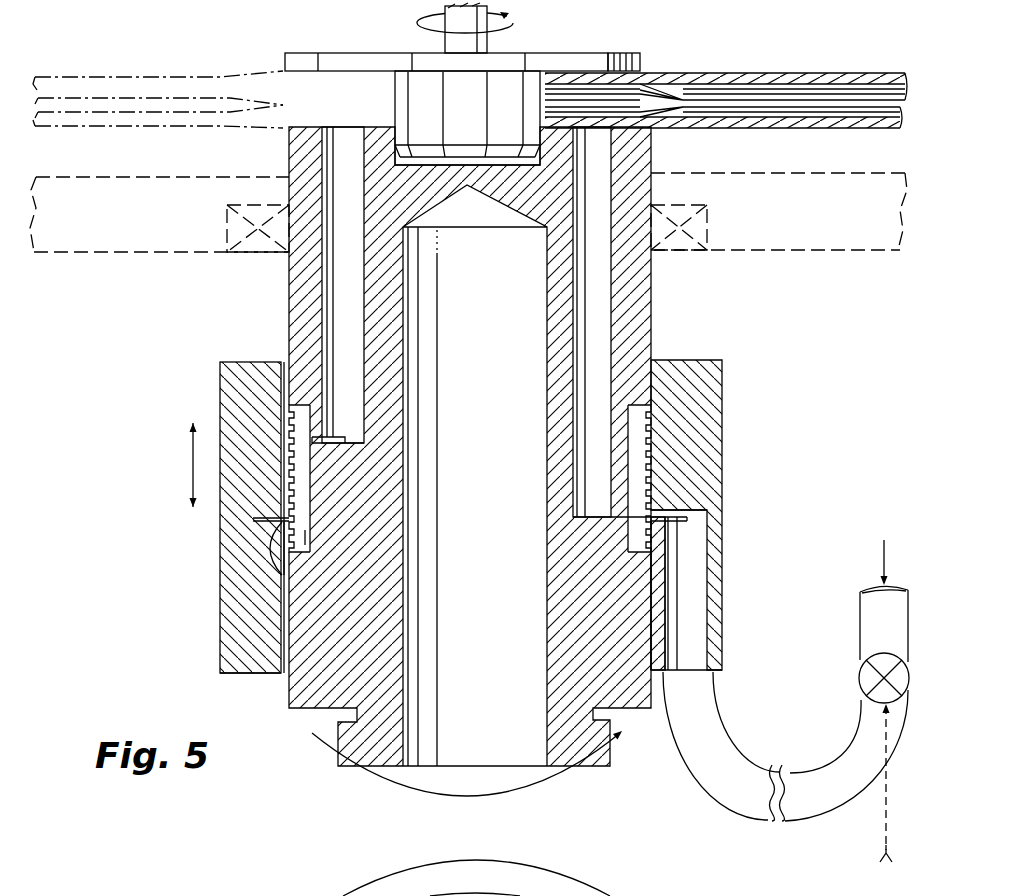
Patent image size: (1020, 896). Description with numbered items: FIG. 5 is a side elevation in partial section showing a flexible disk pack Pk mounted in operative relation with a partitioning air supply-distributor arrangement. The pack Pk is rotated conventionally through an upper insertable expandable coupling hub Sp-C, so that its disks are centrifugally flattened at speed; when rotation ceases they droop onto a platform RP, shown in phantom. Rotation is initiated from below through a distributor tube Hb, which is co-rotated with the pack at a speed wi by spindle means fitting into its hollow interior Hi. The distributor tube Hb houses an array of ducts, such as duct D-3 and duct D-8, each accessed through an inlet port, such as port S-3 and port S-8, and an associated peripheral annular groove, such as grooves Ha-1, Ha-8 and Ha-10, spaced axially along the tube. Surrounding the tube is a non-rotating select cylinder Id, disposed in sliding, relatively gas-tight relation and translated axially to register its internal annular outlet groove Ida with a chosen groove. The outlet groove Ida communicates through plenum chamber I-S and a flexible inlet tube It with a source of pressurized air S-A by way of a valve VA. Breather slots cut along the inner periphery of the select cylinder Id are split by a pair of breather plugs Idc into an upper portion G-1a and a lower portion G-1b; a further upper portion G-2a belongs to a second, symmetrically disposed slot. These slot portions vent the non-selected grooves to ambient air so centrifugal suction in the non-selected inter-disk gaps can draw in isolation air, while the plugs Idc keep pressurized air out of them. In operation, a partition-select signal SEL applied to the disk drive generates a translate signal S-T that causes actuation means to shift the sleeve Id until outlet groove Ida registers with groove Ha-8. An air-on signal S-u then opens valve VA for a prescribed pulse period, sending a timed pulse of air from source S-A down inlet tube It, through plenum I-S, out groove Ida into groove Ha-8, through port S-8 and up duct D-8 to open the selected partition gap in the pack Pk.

The insertable expandable coupling hub Sp-C is at (549, 45).
The translate signal S-T is at (643, 82).
The flexible disk pack Pk is at (754, 68).
The platform RP is at (770, 173).
The duct D-3 is at (355, 320).
The distributor cylinder Hb is at (657, 321).
The select cylinder Id is at (726, 356).
The upper breather slot portion G-1a is at (287, 362).
The lower breather slot portion G-1b is at (290, 680).
The duct D-8 is at (592, 397).
The annular inlet groove Ha-1 is at (650, 408).
The annular inlet groove Ha-8 is at (650, 510).
The annular inlet groove Ha-10 is at (303, 548).
The inlet port S-3 is at (322, 438).
The inlet port S-8 is at (640, 518).
The annular outlet groove Ida is at (265, 520).
The breather plug Idc is at (280, 550).
The plenum chamber I-S is at (693, 610).
The hollow interior Hi is at (500, 717).
The rotational speed wi is at (610, 777).
The inlet tube It is at (723, 727).
The valve VA is at (863, 652).
The source of pressurized air S-A is at (868, 578).
The air-on signal S-u is at (852, 783).
The partition-select signal SEL is at (883, 882).
The upper breather slot portion G-2a is at (527, 878).